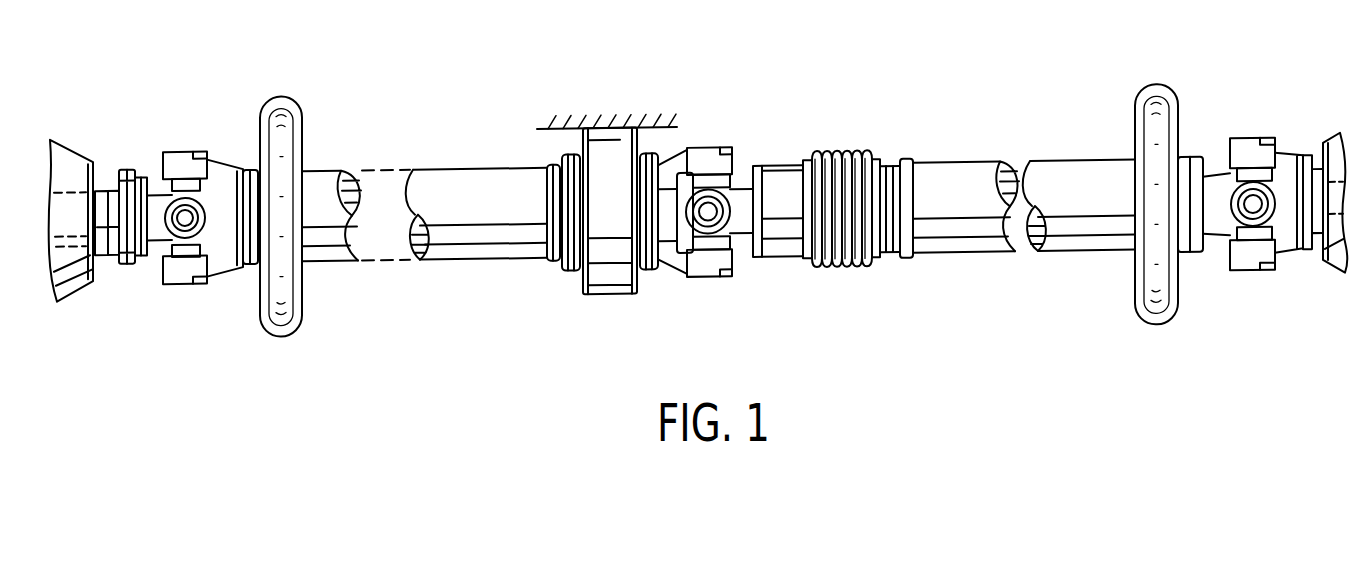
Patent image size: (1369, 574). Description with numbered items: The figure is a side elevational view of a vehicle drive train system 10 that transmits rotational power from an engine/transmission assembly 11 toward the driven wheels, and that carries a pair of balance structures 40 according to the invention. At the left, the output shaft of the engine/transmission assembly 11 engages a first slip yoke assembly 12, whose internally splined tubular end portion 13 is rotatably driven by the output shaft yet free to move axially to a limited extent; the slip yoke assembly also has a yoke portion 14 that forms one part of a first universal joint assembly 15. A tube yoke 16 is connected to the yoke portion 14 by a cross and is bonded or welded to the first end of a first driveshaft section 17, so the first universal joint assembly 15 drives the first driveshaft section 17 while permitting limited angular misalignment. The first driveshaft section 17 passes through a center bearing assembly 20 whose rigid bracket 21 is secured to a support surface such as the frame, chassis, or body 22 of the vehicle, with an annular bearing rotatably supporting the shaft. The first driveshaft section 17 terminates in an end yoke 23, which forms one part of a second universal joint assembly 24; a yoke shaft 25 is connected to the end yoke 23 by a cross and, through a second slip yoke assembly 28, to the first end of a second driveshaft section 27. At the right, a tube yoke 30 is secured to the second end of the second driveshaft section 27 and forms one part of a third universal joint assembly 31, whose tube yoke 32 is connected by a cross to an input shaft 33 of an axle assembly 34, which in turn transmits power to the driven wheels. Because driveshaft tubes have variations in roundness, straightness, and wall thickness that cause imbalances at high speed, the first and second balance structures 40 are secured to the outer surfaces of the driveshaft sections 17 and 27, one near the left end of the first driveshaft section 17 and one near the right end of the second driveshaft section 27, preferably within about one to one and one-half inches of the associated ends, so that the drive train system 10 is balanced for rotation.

The drive train system 10 is at (931, 144).
The engine/transmission assembly 11 is at (72, 167).
The first slip yoke assembly 12 is at (128, 268).
The tubular end portion 13 is at (108, 262).
The yoke portion 14 is at (157, 239).
The first universal joint assembly 15 is at (185, 148).
The tube yoke 16 is at (226, 183).
The first driveshaft section 17 is at (323, 258).
The center bearing assembly 20 is at (570, 282).
The bracket 21 is at (598, 283).
The body 22 is at (549, 143).
The end yoke 23 is at (672, 165).
The second universal joint assembly 24 is at (701, 283).
The yoke shaft 25 is at (735, 198).
The second driveshaft section 27 is at (990, 246).
The second slip yoke assembly 28 is at (870, 283).
The tube yoke 30 is at (1222, 222).
The third universal joint assembly 31 is at (1243, 268).
The tube yoke 32 is at (1244, 148).
The input shaft 33 is at (1318, 178).
The axle assembly 34 is at (1331, 252).
The balance structures 40 is at (303, 139).